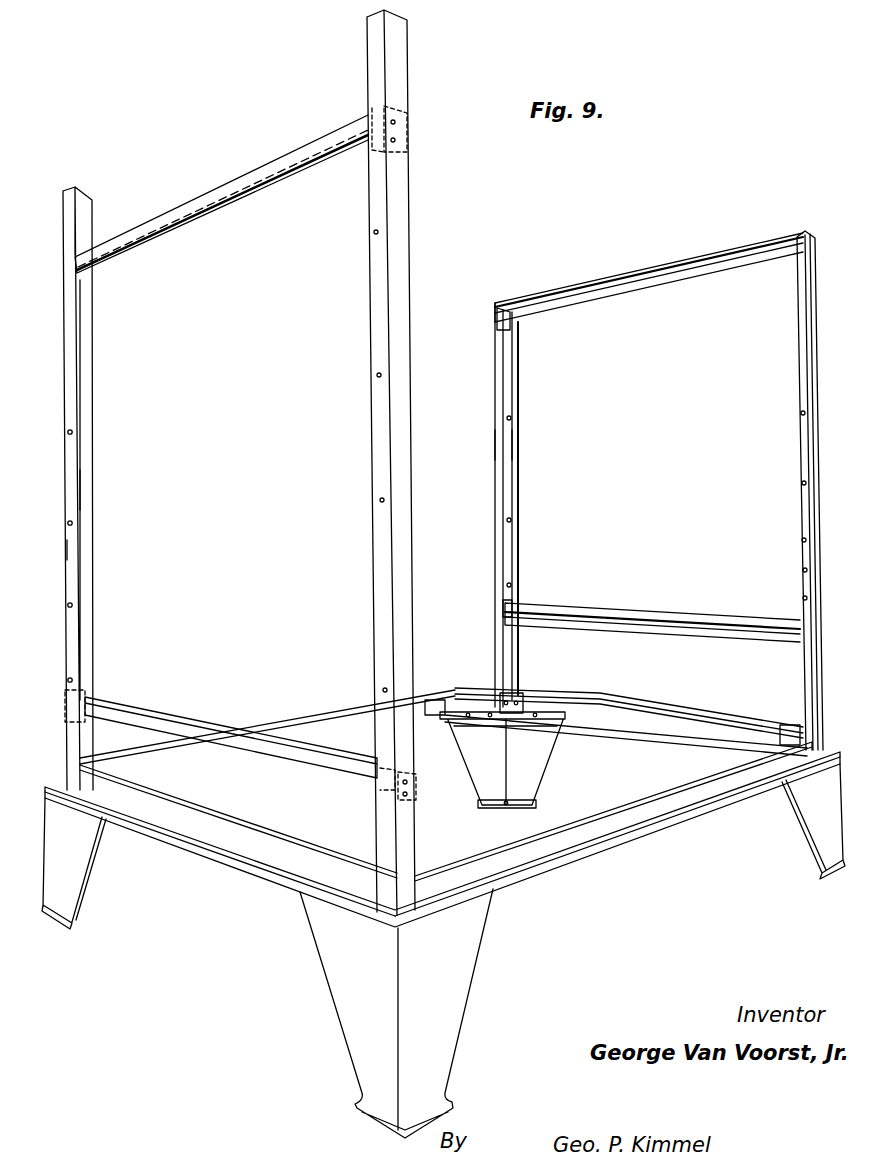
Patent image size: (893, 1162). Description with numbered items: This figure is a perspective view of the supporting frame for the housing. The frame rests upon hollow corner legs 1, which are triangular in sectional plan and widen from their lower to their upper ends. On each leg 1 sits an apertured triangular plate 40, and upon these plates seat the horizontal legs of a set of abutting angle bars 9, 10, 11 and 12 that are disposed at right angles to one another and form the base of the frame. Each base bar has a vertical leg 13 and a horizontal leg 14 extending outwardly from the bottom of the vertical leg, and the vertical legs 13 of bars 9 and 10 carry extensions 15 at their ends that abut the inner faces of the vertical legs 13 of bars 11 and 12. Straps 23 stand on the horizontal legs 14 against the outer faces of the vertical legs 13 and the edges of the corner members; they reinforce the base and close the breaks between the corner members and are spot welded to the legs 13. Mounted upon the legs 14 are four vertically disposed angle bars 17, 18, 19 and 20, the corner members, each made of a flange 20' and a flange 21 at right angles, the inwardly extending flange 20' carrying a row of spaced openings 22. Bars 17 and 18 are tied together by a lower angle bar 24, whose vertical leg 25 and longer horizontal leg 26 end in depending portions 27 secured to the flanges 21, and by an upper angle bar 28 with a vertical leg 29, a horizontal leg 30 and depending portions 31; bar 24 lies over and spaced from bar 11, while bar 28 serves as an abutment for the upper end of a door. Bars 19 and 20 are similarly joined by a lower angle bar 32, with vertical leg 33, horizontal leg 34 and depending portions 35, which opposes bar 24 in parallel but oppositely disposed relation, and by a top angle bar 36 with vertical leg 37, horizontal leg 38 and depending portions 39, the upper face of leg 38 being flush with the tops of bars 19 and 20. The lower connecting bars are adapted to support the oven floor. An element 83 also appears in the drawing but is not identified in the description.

The hollow corner leg 1 is at (338, 954).
The angle bar 9 is at (309, 724).
The angle bar 10 is at (576, 805).
The angle bar 11 is at (226, 807).
The angle bar 12 is at (656, 711).
The vertical leg 13 is at (432, 700).
The horizontal leg 14 is at (163, 842).
The extension 15 is at (515, 700).
The corner member angle bar 17 is at (99, 359).
The corner member angle bar 18 is at (406, 224).
The corner member angle bar 19 is at (528, 351).
The corner member angle bar 20 is at (785, 490).
The flange 20' is at (545, 444).
The flange 21 is at (90, 552).
The spaced openings 22 is at (82, 430).
The strap 23 is at (622, 808).
The angle bar 24 is at (319, 772).
The vertical leg 25 is at (82, 700).
The horizontal leg 26 is at (385, 772).
The depending portion 27 is at (408, 788).
The angle bar 28 is at (180, 207).
The vertical leg 29 is at (250, 178).
The horizontal leg 30 is at (385, 112).
The depending portion 31 is at (400, 134).
The angle bar 32 is at (617, 607).
The vertical leg 33 is at (563, 612).
The horizontal leg 34 is at (640, 630).
The depending portion 35 is at (504, 605).
The angle bar 36 is at (610, 276).
The vertical leg 37 is at (680, 282).
The horizontal leg 38 is at (650, 276).
The depending portion 39 is at (497, 322).
The apertured triangular plate 40 is at (535, 712).
The brace 83 is at (535, 728).